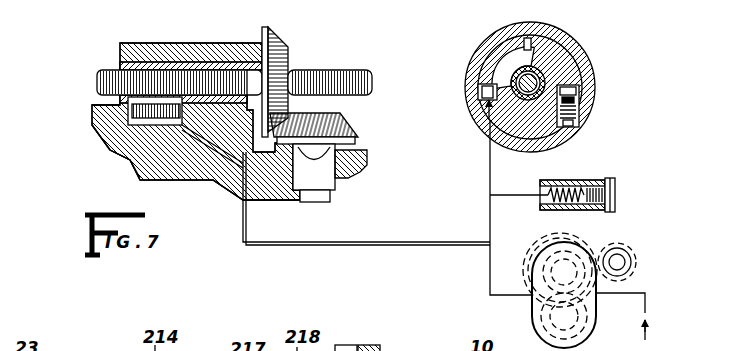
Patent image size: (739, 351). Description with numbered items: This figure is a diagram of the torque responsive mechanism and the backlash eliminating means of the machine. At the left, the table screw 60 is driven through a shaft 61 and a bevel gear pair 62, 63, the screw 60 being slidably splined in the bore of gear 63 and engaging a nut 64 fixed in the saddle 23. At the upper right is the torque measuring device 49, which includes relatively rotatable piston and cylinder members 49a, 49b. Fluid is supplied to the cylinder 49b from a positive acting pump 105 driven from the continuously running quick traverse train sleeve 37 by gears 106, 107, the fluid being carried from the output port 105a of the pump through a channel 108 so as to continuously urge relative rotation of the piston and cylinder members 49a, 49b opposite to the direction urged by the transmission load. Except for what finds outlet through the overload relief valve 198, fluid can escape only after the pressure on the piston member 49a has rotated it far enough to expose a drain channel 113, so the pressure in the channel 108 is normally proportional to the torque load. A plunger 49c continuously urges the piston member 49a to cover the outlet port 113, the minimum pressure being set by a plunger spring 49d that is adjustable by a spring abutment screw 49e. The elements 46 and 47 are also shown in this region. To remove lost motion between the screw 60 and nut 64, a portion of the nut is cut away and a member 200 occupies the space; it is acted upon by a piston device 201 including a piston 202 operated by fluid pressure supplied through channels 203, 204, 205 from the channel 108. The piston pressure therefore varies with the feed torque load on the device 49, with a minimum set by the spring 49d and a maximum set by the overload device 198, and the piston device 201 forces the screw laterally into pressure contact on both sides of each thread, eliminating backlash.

The saddle 23 is at (143, 133).
The quick traverse train sleeve 37 is at (622, 260).
The shaft hub 46 is at (488, 70).
The pin 47 is at (480, 103).
The torque measuring device 49 is at (600, 77).
The piston member 49a is at (587, 46).
The cylinder member 49b is at (512, 43).
The plunger 49c is at (583, 90).
The plunger spring 49d is at (584, 114).
The spring abutment screw 49e is at (568, 128).
The table screw 60 is at (338, 72).
The shaft 61 is at (330, 198).
The bevel gear 62 is at (357, 134).
The bevel gear 63 is at (283, 35).
The nut 64 is at (120, 65).
The pump 105 is at (590, 240).
The output port 105a is at (535, 299).
The gear 106 is at (636, 266).
The gear 107 is at (531, 256).
The channel 108 is at (489, 214).
The drain channel 113 is at (523, 49).
The overload relief valve 198 is at (618, 193).
The member 200 is at (125, 116).
The piston device 201 is at (127, 165).
The piston 202 is at (108, 146).
The channel 203 is at (203, 147).
The channel 204 is at (258, 200).
The channel 205 is at (392, 246).